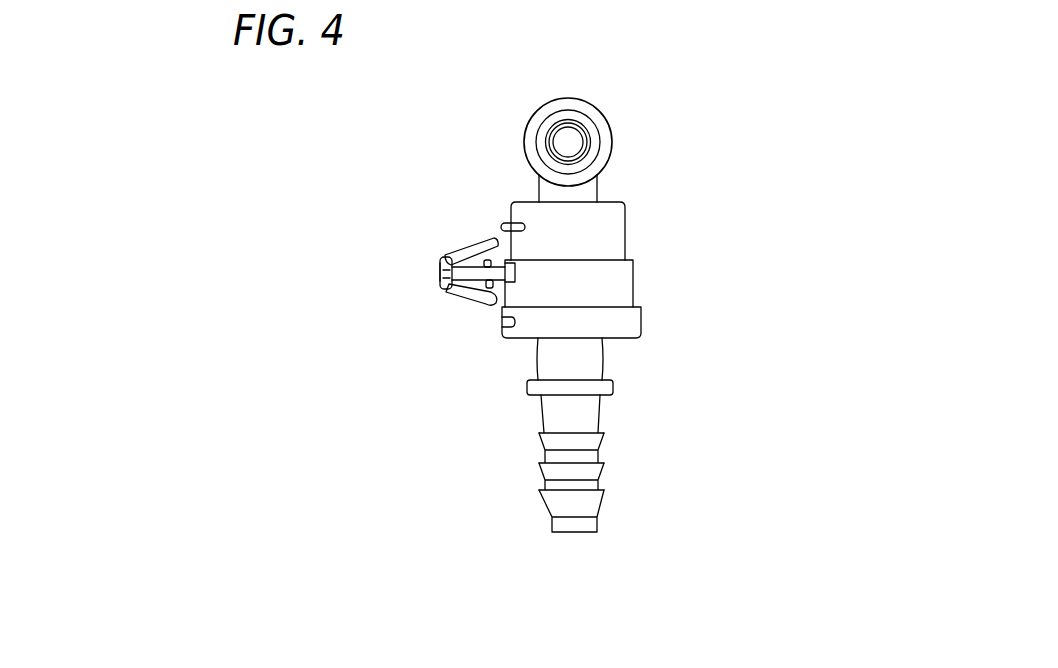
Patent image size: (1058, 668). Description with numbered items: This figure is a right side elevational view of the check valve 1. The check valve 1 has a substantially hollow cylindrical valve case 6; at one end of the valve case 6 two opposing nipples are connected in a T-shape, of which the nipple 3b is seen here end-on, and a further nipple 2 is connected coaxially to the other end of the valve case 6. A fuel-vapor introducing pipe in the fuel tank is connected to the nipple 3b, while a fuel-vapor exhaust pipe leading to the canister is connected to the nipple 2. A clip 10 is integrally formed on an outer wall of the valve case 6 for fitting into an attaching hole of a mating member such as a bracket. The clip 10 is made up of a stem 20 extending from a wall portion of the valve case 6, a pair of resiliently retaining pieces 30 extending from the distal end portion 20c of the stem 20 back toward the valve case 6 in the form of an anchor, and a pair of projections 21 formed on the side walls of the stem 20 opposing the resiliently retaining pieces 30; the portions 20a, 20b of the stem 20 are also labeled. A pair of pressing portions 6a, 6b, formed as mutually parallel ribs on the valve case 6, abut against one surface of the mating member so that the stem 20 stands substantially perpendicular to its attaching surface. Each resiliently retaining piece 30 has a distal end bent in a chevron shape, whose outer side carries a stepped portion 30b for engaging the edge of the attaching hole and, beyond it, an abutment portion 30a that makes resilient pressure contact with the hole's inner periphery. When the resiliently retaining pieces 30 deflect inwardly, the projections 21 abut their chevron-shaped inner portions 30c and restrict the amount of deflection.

The check valve 1 is at (706, 276).
The nipple 2 is at (590, 410).
The nipple 3b is at (590, 124).
The valve case 6 is at (617, 213).
The pressing portion 6a is at (504, 314).
The pressing portion 6b is at (505, 224).
The clip 10 is at (389, 272).
The stem 20 is at (373, 380).
The holder portion a 20a is at (446, 296).
The holder portion b 20b is at (446, 290).
The distal end portion 20c is at (444, 285).
The projection 21 is at (498, 251).
The resiliently retaining piece 30 is at (454, 245).
The abutment portion 30a is at (498, 238).
The stepped portion 30b is at (497, 241).
The inner portion 30c is at (446, 257).